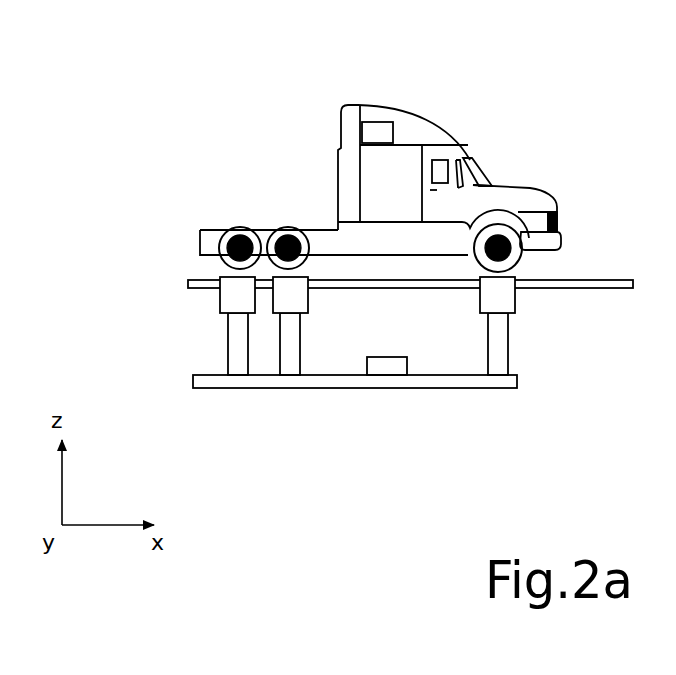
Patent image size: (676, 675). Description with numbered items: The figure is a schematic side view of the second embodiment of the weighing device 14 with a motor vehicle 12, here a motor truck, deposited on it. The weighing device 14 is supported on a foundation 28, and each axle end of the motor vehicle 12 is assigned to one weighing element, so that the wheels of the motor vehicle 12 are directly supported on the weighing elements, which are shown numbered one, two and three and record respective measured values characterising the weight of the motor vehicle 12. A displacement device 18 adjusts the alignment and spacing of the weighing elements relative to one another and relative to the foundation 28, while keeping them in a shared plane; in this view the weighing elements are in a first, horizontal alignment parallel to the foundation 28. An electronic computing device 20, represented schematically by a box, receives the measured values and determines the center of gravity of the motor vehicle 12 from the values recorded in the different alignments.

The motor vehicle 12 is at (378, 148).
The weighing device 14 is at (369, 399).
The displacement device 18 is at (369, 387).
The electronic computing device 20 is at (387, 375).
The foundation 28 is at (460, 388).